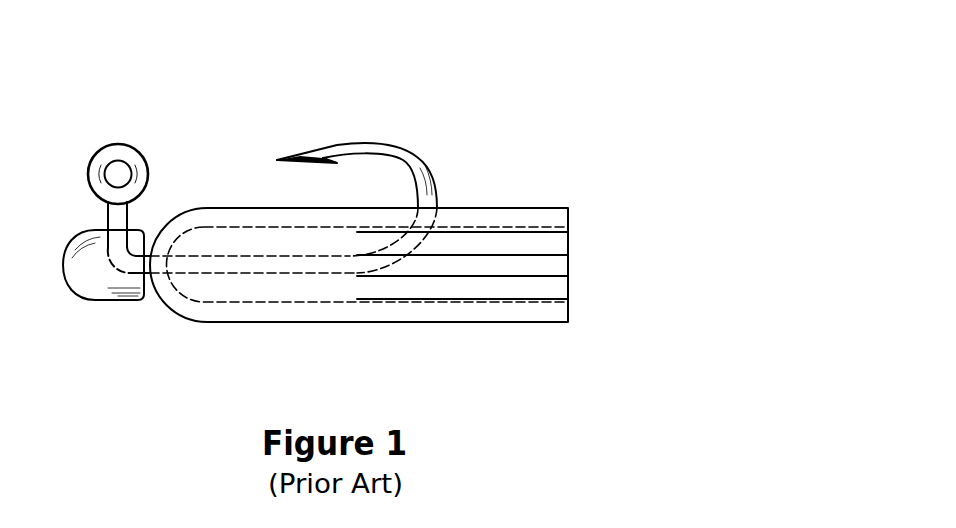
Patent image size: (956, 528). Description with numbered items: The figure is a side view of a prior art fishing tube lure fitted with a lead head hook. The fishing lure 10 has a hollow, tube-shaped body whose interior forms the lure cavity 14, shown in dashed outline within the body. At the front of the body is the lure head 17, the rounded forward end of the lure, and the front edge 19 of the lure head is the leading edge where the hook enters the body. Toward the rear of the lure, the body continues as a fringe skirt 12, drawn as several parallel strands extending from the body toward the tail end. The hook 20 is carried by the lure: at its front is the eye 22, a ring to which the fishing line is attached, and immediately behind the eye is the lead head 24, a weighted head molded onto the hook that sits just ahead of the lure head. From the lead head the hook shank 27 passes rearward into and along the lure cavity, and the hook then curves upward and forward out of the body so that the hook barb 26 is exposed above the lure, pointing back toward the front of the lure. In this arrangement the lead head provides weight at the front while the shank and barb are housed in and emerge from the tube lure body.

The fishing lure 10 is at (500, 88).
The fringe skirt 12 is at (600, 238).
The lure cavity 14 is at (207, 288).
The lure head 17 is at (191, 181).
The front edge of the lure head 19 is at (160, 232).
The hook 20 is at (411, 78).
The eye 22 is at (120, 162).
The lead head 24 is at (85, 278).
The hook barb 26 is at (305, 153).
The hook shank 27 is at (252, 270).